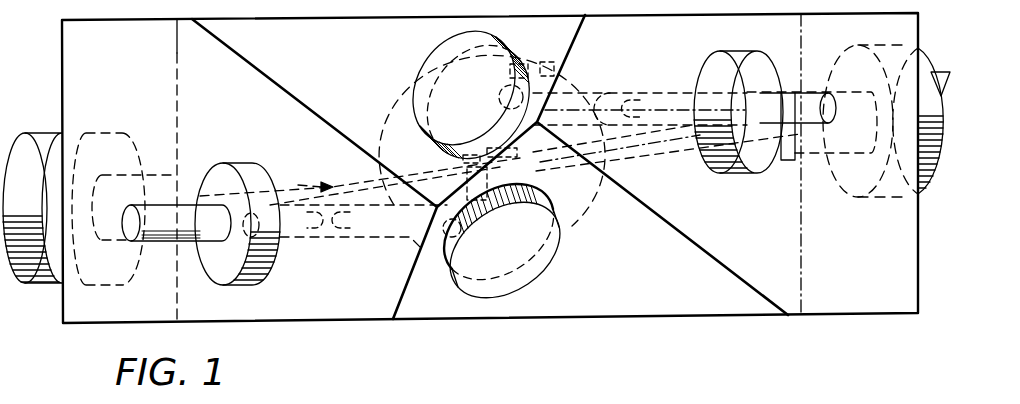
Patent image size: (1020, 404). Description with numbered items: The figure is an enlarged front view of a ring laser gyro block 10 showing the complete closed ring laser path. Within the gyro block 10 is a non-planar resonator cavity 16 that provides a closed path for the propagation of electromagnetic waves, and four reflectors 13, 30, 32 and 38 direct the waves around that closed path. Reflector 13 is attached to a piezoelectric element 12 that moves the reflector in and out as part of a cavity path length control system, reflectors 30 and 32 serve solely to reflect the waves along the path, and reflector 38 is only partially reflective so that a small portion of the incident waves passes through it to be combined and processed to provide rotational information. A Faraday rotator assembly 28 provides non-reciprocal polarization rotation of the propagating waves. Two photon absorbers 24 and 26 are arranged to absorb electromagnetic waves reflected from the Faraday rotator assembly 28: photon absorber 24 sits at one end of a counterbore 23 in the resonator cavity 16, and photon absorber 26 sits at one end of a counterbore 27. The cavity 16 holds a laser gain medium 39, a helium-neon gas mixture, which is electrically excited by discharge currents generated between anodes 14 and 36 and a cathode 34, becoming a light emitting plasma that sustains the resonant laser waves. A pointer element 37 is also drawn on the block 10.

The ring laser gyro block 10 is at (752, 403).
The piezoelectric element 12 is at (44, 133).
The reflector 13 is at (90, 127).
The anode 14 is at (153, 232).
The non-planar resonator cavity 16 is at (320, 180).
The counterbore 23 is at (518, 62).
The photon absorber 24 is at (551, 62).
The photon absorber 26 is at (441, 250).
The counterbore 27 is at (452, 300).
The Faraday rotator assembly 28 is at (540, 169).
The reflector 30 is at (440, 63).
The reflector 32 is at (537, 255).
The cathode 34 is at (380, 100).
The anode 36 is at (770, 83).
The pointer 37 is at (942, 72).
The reflector 38 is at (888, 205).
The laser gain medium 39 is at (298, 183).